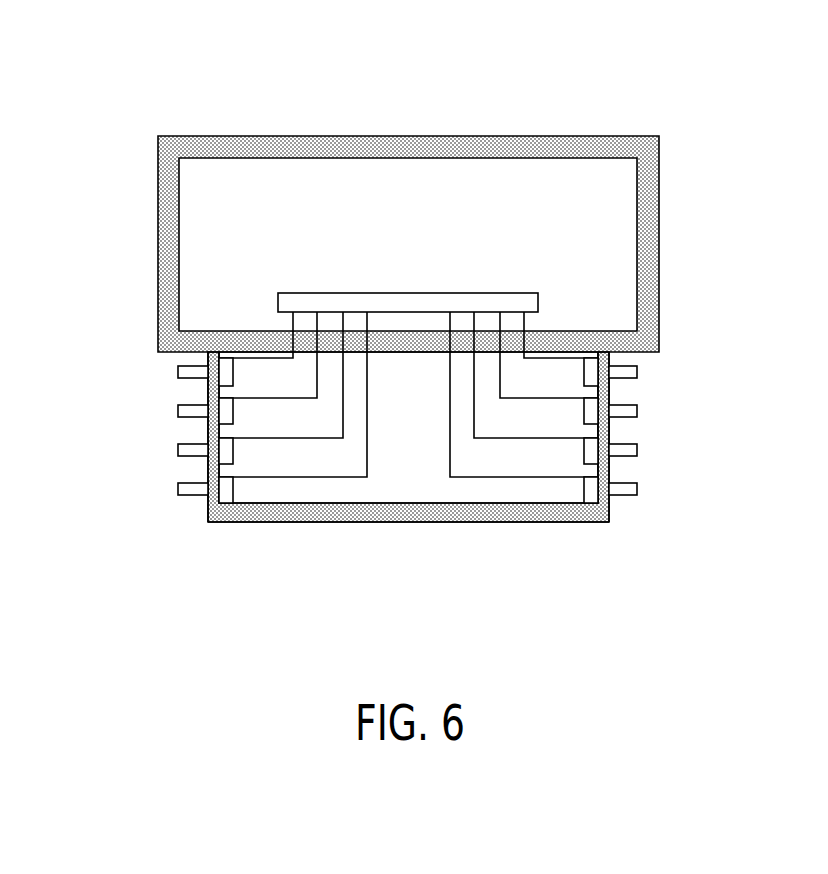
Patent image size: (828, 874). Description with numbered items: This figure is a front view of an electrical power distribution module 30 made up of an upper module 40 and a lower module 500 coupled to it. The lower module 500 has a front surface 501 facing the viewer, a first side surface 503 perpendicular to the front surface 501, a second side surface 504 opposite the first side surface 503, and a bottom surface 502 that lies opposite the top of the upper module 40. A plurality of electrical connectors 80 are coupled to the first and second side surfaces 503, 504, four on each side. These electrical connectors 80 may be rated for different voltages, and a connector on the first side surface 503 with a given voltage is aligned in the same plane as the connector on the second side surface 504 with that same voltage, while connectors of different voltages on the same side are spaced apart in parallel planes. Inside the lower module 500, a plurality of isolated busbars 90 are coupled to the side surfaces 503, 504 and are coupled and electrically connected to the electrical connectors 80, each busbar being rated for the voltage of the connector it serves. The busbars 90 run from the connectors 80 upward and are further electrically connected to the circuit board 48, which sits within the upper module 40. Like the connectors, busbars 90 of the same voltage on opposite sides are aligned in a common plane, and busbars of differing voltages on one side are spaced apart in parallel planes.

The electrical power distribution module 30 is at (148, 82).
The upper module 40 is at (117, 237).
The circuit board 48 is at (407, 292).
The electrical connectors 80 is at (178, 372).
The isolated busbars 90 is at (233, 367).
The lower module 500 is at (376, 541).
The front surface 501 is at (430, 474).
The bottom surface 502 is at (243, 522).
The first side surface 503 is at (208, 512).
The second side surface 504 is at (612, 508).